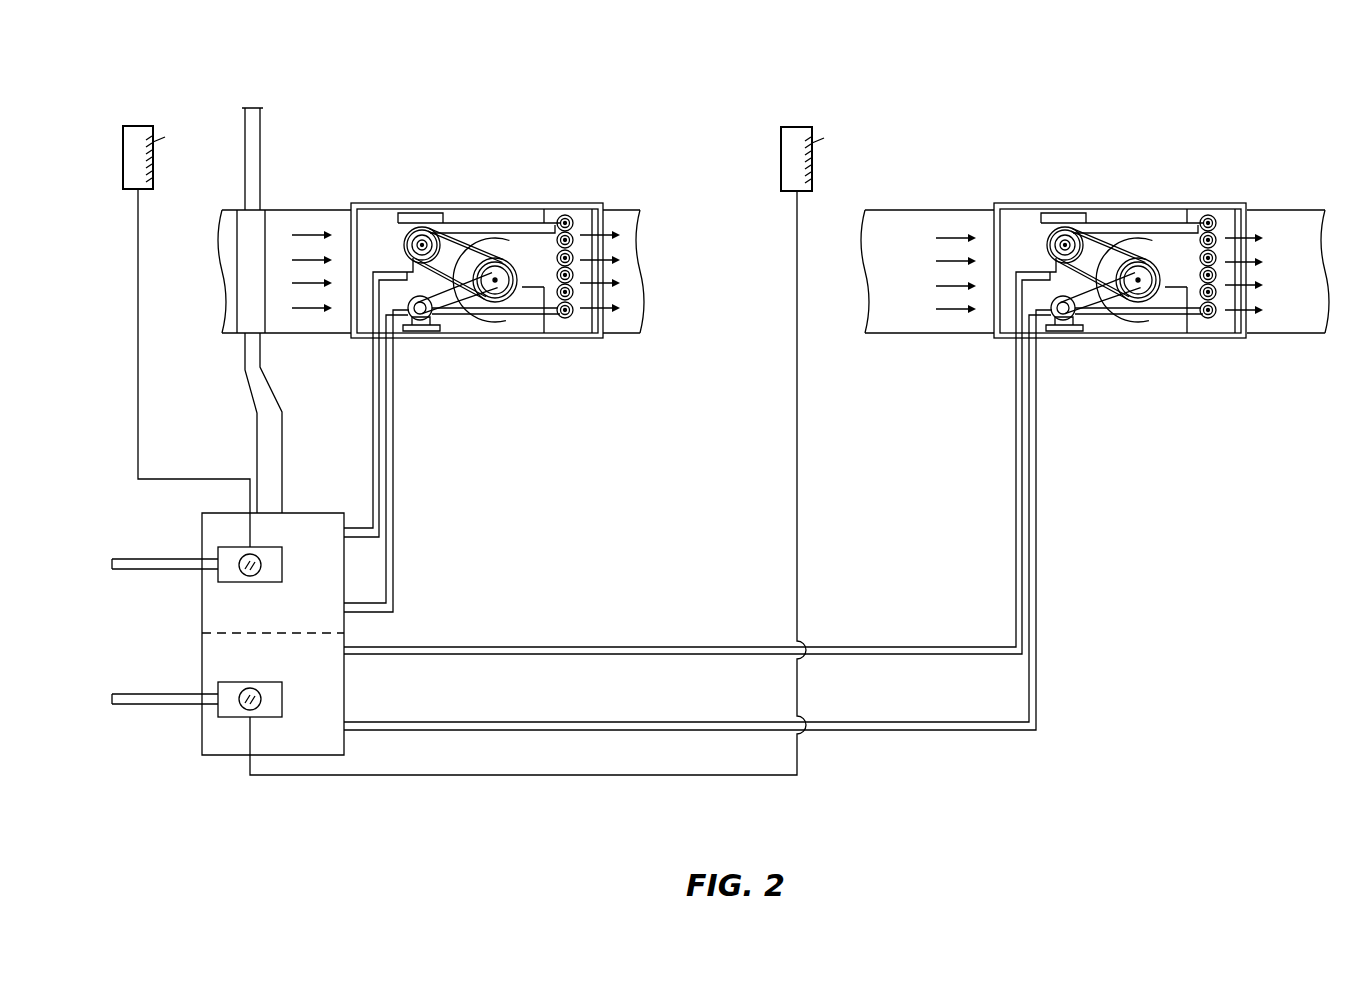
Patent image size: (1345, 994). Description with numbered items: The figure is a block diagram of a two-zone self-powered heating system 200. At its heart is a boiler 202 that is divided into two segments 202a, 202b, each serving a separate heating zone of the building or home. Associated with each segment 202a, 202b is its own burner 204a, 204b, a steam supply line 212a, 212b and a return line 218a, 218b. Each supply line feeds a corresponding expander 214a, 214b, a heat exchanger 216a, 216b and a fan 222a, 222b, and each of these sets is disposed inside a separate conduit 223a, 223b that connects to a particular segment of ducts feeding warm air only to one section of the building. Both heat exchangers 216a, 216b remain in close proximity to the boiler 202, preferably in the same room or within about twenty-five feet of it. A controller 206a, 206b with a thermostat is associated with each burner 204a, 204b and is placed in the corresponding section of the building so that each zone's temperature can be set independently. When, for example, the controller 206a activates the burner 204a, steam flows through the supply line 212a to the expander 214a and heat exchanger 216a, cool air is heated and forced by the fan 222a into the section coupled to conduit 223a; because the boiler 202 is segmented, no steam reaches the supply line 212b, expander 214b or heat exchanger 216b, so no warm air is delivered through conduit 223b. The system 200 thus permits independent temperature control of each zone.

The two-zone heating system 200 is at (754, 62).
The boiler 202 is at (276, 607).
The first boiler segment 202a is at (330, 627).
The second boiler segment 202b is at (330, 750).
The first burner 204a is at (218, 582).
The second burner 204b is at (218, 717).
The first controller 206a is at (128, 126).
The second controller 206b is at (802, 127).
The first steam supply line 212a is at (372, 372).
The second steam supply line 212b is at (372, 372).
The first expander 214a is at (397, 233).
The second expander 214b is at (1035, 214).
The first heat exchanger 216a is at (507, 208).
The second heat exchanger 216b is at (1184, 241).
The first return line 218a is at (396, 469).
The second return line 218b is at (396, 469).
The first fan 222a is at (480, 240).
The second fan 222b is at (1108, 233).
The first conduit 223a is at (620, 210).
The second conduit 223b is at (1278, 239).